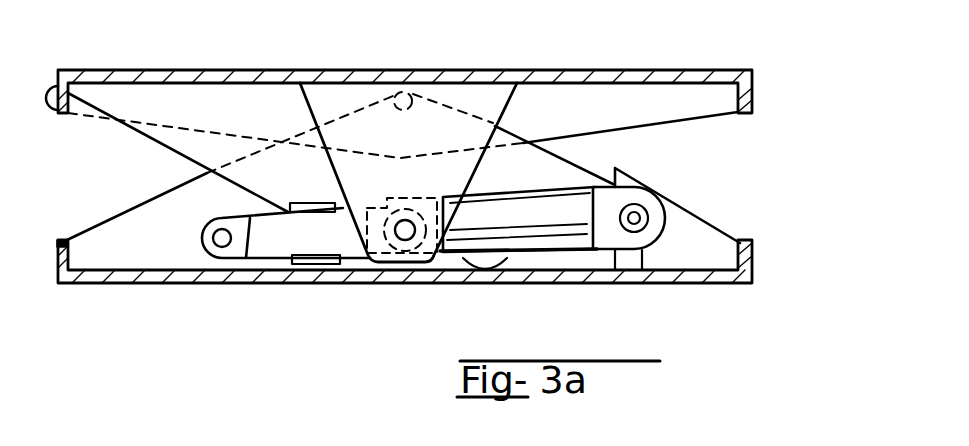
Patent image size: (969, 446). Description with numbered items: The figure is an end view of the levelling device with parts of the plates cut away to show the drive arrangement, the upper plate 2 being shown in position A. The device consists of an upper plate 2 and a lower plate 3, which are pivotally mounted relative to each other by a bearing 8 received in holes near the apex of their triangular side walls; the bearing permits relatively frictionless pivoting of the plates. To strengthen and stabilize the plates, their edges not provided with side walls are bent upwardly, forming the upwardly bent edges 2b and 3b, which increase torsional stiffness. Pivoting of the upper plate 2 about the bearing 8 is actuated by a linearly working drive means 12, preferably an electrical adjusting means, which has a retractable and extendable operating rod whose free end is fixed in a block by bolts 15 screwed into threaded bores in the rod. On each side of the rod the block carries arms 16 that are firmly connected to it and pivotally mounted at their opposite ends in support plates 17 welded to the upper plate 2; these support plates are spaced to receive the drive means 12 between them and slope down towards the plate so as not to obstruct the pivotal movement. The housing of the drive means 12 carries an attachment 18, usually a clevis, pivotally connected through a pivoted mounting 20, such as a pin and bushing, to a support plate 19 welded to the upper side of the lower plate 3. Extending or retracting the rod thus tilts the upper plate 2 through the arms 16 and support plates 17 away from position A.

The upper plate 2 is at (173, 72).
The upwardly bent edge 2b is at (61, 68).
The lower plate 3 is at (402, 284).
The upwardly bent edge 3b is at (62, 262).
The bearing 8 is at (397, 112).
The drive means 12 is at (513, 170).
The bolts 15 is at (220, 238).
The arms 16 is at (285, 240).
The support plates 17 is at (200, 147).
The attachment 18 is at (635, 237).
The support plate 19 is at (698, 235).
The pivoted mounting 20 is at (648, 208).
The position A is at (682, 70).